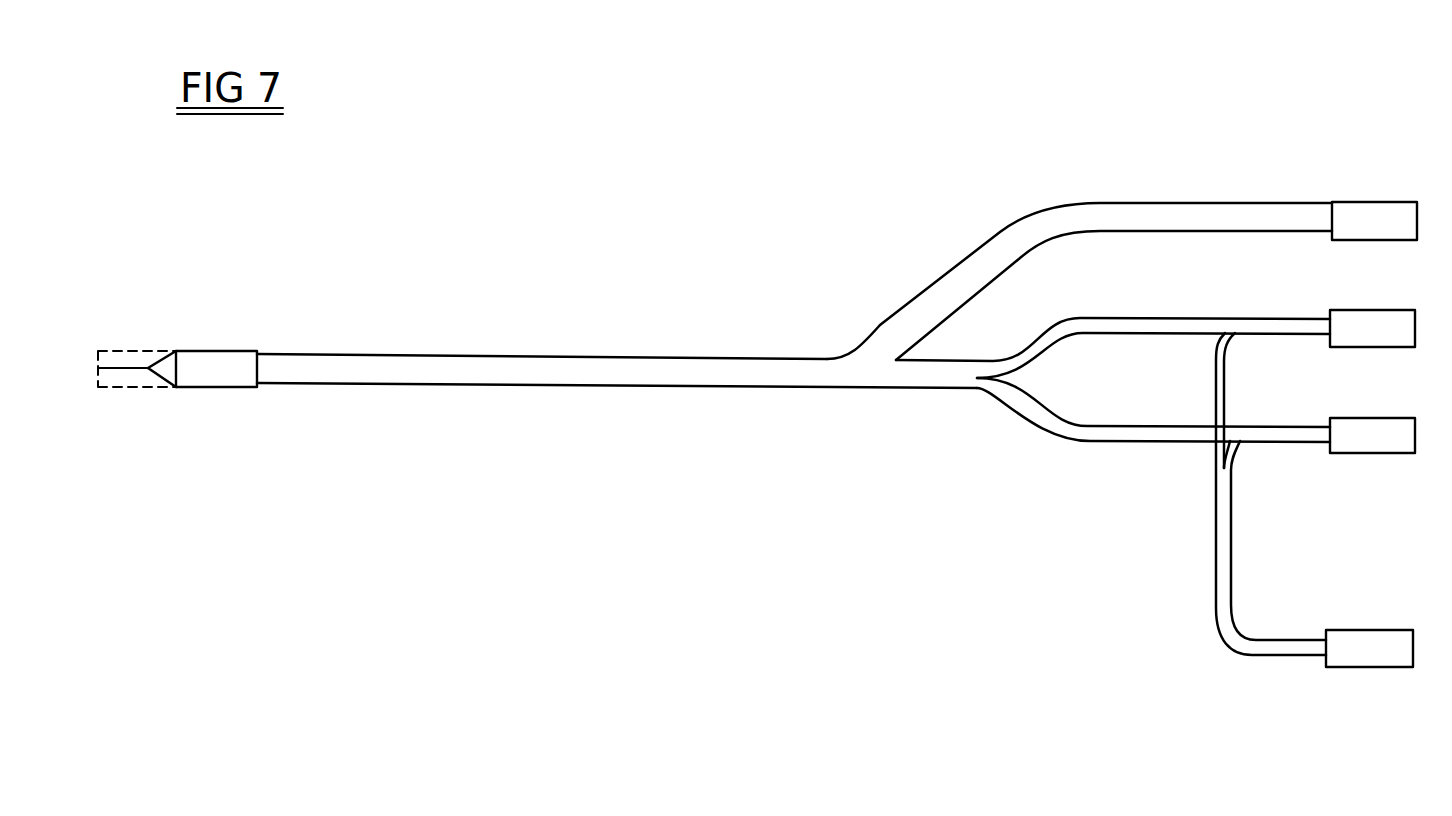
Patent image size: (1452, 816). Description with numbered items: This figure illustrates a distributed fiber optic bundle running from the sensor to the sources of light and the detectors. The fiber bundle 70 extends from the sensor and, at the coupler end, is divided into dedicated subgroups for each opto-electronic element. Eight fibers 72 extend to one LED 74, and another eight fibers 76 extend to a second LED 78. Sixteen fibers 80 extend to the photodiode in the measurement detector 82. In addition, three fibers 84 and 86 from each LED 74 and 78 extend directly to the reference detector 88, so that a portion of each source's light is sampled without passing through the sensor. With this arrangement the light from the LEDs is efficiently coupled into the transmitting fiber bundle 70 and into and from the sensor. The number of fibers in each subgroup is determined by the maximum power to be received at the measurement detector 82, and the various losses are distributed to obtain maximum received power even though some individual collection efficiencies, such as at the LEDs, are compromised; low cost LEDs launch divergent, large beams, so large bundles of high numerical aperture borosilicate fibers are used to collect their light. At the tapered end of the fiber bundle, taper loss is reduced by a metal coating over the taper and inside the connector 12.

The connector 12 is at (146, 390).
The fiber bundle 70 is at (743, 390).
The fibers 72 is at (1110, 315).
The LED 74 is at (1360, 348).
The fibers 76 is at (1183, 443).
The LED 78 is at (1362, 455).
The fibers 80 is at (1172, 201).
The measurement detector 82 is at (1368, 202).
The fibers 84 is at (1217, 378).
The fibers 86 is at (1242, 448).
The reference detector 88 is at (1357, 668).